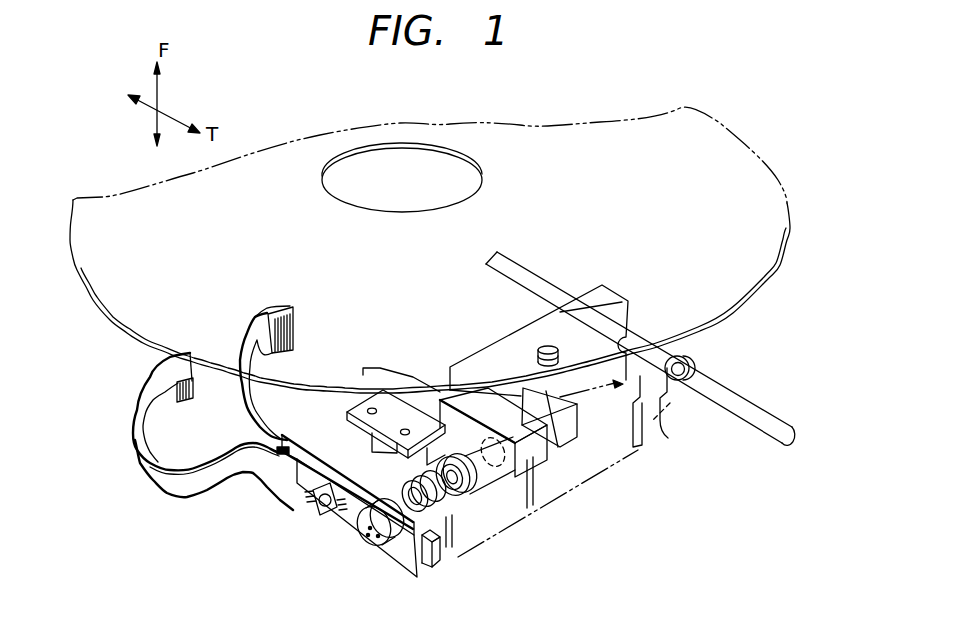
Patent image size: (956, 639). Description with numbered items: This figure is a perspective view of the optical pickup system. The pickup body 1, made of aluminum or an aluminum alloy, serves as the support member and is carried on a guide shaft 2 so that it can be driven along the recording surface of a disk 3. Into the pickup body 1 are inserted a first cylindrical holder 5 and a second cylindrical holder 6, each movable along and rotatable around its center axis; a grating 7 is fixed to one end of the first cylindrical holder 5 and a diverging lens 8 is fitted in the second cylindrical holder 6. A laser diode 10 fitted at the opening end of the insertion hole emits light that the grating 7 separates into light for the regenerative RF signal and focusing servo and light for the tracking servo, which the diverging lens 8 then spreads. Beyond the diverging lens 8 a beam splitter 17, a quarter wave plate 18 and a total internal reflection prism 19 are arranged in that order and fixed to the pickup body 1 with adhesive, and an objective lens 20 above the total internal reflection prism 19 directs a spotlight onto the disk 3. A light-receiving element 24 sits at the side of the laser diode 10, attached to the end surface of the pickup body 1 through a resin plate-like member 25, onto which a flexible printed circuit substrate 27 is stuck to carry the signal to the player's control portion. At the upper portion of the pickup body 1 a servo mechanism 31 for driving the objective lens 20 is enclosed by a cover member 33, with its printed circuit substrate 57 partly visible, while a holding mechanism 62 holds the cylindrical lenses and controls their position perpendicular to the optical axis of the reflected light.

The pickup body 1 is at (637, 425).
The guide shaft 2 is at (746, 402).
The disk 3 is at (594, 127).
The first cylindrical holder 5 is at (443, 562).
The second cylindrical holder 6 is at (471, 488).
The grating 7 is at (441, 503).
The diverging lens 8 is at (494, 470).
The laser diode 10 is at (380, 543).
The beam splitter 17 is at (537, 462).
The quarter wave plate 18 is at (579, 412).
The total internal reflection prism 19 is at (562, 452).
The objective lens 20 is at (547, 346).
The light-receiving element 24 is at (327, 512).
The resin plate-like member 25 is at (284, 458).
The flexible printed circuit substrate 27 is at (251, 474).
The servo mechanism 31 is at (488, 334).
The cover member 33 is at (475, 363).
The printed circuit substrate 57 is at (258, 330).
The holding mechanism 62 is at (367, 383).